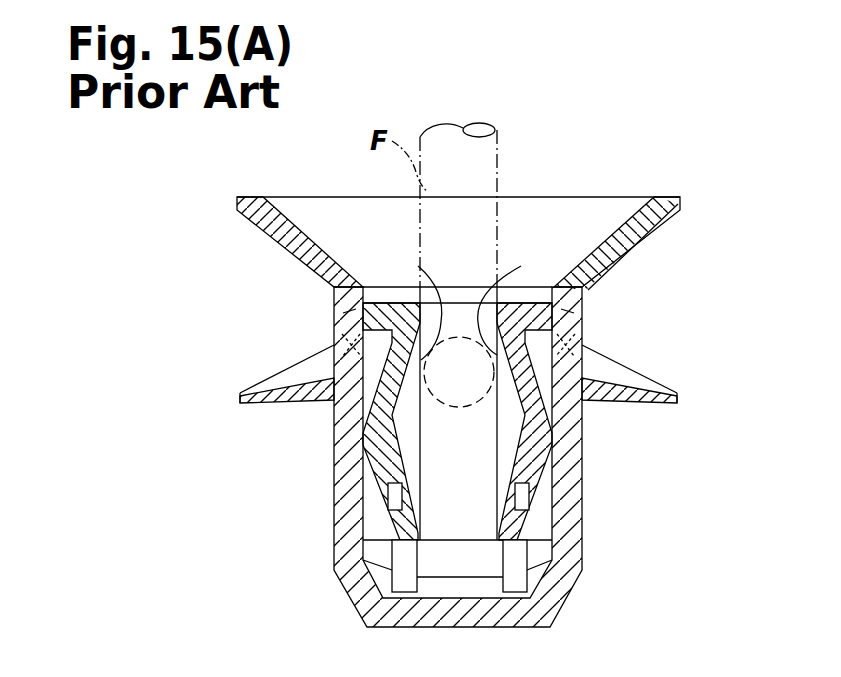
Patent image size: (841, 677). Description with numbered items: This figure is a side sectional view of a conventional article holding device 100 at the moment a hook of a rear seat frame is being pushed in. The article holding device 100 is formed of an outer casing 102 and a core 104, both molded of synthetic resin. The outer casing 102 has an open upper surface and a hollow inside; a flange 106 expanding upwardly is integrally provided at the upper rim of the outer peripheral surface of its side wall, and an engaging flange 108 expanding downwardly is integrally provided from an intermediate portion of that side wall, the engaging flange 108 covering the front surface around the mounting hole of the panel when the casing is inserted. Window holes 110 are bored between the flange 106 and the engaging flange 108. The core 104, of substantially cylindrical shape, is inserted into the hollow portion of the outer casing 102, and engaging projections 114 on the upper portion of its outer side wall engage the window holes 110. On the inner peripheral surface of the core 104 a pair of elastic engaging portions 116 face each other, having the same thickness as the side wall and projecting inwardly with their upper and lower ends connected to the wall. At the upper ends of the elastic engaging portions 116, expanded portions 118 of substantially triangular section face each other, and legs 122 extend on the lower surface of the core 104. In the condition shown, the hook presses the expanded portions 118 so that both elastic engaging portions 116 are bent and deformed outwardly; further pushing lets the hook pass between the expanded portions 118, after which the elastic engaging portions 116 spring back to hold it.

The article holding device 100 is at (615, 152).
The outer casing 102 is at (636, 197).
The core 104 is at (524, 292).
The flange 106 is at (665, 218).
The engaging flange 108 is at (645, 387).
The window holes 110 is at (330, 350).
The engaging projections 114 is at (340, 315).
The elastic engaging portions 116 is at (390, 484).
The expanded portions 118 is at (428, 283).
The legs 122 is at (402, 582).